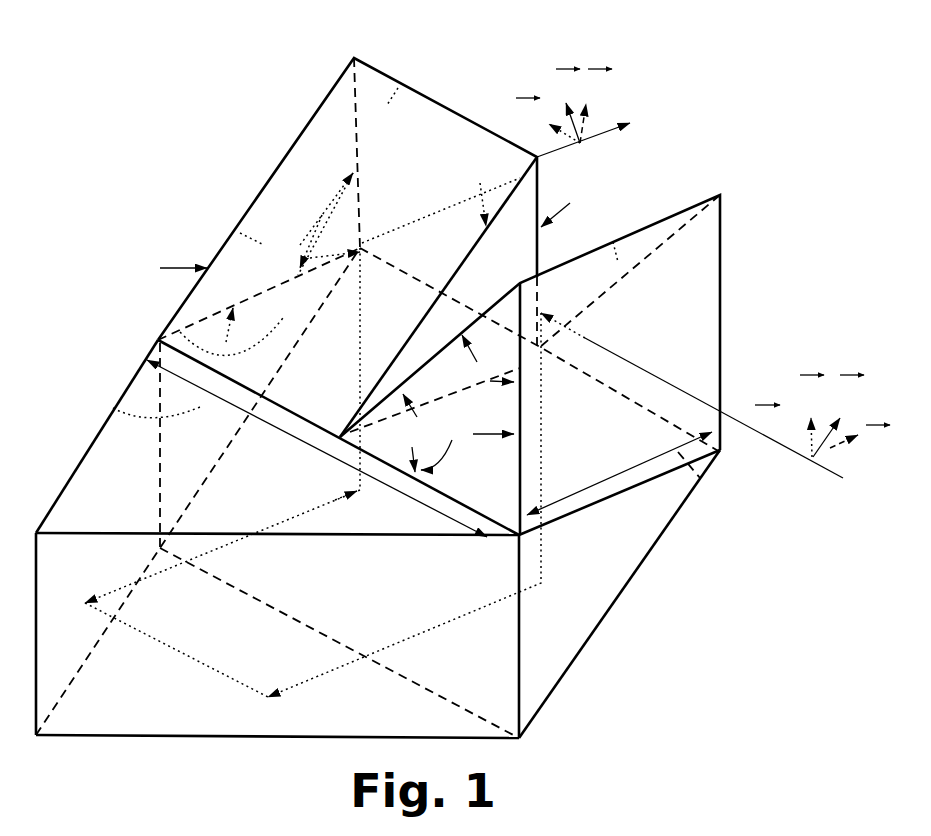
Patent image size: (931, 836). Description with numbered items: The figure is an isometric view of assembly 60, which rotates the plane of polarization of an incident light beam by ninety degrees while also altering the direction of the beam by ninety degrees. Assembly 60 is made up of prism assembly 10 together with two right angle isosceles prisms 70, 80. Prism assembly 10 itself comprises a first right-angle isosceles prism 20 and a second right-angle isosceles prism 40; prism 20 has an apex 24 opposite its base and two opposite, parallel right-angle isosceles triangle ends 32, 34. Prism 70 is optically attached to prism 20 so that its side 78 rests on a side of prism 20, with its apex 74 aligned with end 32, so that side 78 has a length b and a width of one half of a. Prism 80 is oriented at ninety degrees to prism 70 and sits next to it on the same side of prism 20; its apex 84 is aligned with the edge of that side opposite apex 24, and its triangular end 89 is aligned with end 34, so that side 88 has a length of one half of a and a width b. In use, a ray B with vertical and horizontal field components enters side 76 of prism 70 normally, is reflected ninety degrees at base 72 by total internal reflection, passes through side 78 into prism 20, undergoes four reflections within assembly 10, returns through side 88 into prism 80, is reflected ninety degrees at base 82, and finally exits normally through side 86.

The prism assembly 10 is at (378, 534).
The first right-angle isosceles prism 20 is at (642, 557).
The apex 24 is at (523, 540).
The triangle end 32 is at (550, 660).
The triangle end 34 is at (113, 408).
The second right-angle isosceles prism 40 is at (208, 736).
The assembly 60 is at (670, 139).
The right angle isosceles prism 70 is at (571, 356).
The base 72 is at (613, 242).
The apex 74 is at (650, 483).
The side 76 is at (703, 315).
The side 78 is at (700, 478).
The right angle isosceles prism 80 is at (397, 276).
The base 82 is at (327, 165).
The apex 84 is at (157, 340).
The side 86 is at (404, 85).
The side 88 is at (170, 323).
The triangular end 89 is at (234, 231).